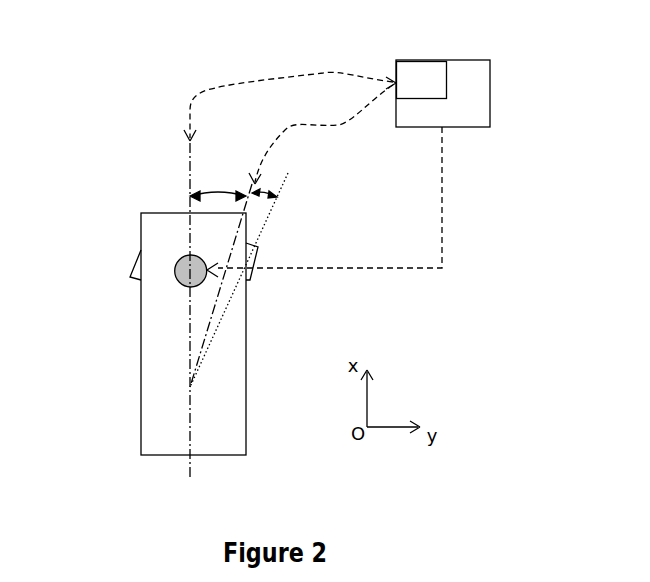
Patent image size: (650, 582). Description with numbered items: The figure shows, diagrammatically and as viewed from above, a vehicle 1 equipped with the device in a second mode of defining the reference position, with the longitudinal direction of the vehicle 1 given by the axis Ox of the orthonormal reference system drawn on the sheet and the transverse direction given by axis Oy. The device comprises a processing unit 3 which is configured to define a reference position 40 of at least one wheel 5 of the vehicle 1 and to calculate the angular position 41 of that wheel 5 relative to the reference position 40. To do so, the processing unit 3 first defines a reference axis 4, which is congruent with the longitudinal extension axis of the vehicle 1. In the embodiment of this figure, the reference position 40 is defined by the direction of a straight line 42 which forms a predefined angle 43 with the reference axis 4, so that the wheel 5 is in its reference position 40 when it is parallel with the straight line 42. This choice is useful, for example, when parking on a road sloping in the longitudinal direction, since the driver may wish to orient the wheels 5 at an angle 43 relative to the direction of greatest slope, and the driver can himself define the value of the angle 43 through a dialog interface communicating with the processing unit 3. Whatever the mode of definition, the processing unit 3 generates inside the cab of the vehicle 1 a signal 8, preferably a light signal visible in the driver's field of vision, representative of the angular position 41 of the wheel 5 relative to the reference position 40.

The vehicle 1 is at (140, 212).
The processing unit 3 is at (490, 93).
The reference axis 4 is at (187, 467).
The wheel 5 is at (131, 263).
The signal 8 is at (183, 288).
The reference position 40 is at (422, 80).
The angular position 41 is at (239, 280).
The straight line 42 is at (217, 297).
The predefined angle 43 is at (218, 183).